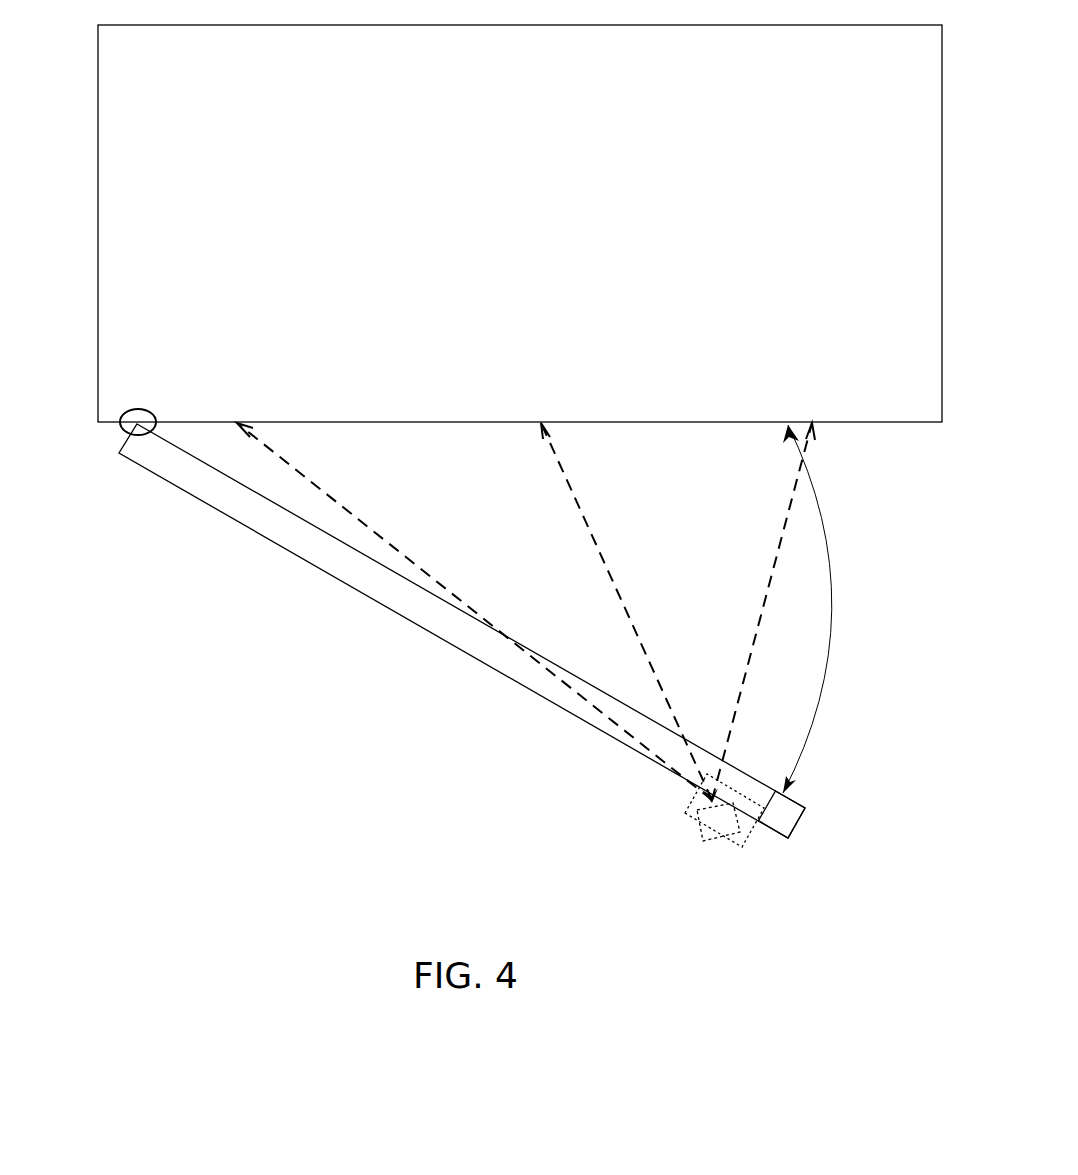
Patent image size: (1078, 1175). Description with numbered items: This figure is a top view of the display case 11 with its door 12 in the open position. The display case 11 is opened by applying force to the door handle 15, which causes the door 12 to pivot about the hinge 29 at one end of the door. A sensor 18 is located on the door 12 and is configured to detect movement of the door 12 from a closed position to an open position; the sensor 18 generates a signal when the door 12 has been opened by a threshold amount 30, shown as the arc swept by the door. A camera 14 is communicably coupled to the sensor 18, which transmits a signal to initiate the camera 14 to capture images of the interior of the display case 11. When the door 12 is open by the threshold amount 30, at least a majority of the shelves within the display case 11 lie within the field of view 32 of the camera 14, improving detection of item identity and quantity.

The display case 11 is at (98, 122).
The door 12 is at (378, 602).
The hinge 29 is at (122, 428).
The sensor 18 is at (803, 822).
The door handle 15 is at (753, 832).
The camera 14 is at (697, 830).
The field of view 32 is at (365, 527).
The threshold amount 30 is at (832, 618).